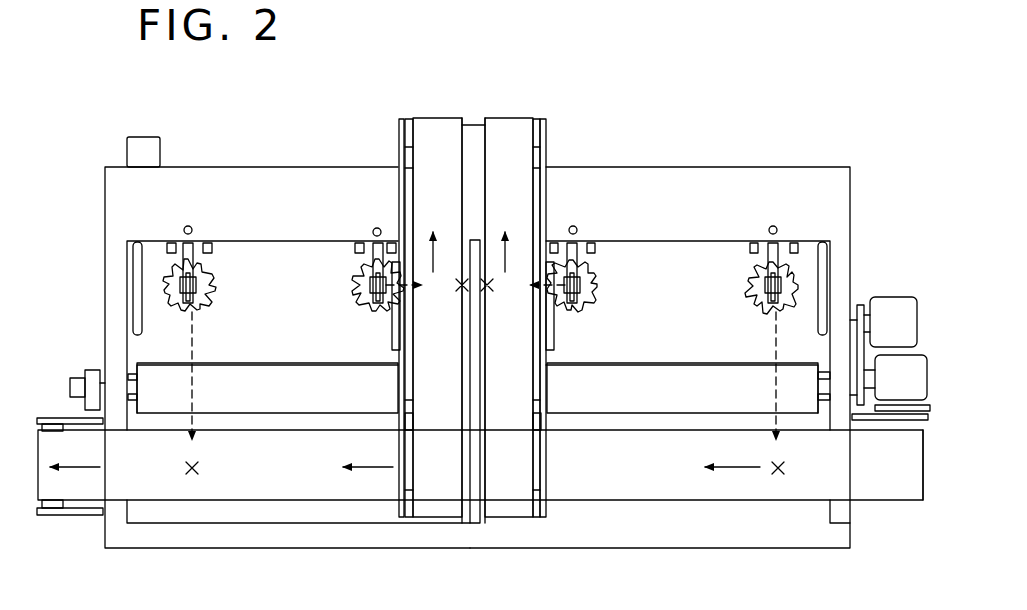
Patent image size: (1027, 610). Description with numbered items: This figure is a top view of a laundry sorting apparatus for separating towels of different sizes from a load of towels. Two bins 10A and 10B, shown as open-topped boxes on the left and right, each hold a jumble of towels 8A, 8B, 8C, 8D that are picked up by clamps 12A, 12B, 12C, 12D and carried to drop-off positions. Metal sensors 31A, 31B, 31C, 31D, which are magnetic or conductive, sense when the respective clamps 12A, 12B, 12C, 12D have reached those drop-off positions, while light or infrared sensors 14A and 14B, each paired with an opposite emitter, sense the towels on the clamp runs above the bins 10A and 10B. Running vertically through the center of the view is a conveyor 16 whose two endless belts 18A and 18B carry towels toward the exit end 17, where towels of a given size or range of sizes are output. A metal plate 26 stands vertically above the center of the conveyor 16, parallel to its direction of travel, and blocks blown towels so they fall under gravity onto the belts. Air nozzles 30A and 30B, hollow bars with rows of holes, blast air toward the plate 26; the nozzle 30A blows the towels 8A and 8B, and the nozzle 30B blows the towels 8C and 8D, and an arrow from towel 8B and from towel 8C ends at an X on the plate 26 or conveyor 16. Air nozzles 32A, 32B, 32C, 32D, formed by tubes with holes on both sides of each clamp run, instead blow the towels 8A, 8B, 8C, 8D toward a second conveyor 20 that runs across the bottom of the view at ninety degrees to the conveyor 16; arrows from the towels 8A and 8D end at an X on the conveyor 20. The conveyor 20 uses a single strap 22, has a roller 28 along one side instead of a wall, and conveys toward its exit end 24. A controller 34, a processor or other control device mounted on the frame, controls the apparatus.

The bin 10A is at (251, 167).
The bin 10B is at (683, 167).
The towel 8A is at (207, 300).
The towel 8B is at (356, 295).
The towel 8C is at (598, 292).
The towel 8D is at (762, 305).
The clamp 12A is at (198, 274).
The clamp 12B is at (362, 274).
The clamp 12C is at (585, 275).
The clamp 12D is at (760, 275).
The sensor 14A is at (392, 338).
The sensor 14B is at (556, 325).
The conveyor 16 is at (474, 125).
The end 17 is at (544, 122).
The belt 18A is at (437, 118).
The belt 18B is at (510, 118).
The conveyor 20 is at (66, 417).
The strap 22 is at (37, 510).
The end 24 is at (34, 430).
The plate 26 is at (480, 396).
The roller 28 is at (792, 398).
The air nozzle 30A is at (135, 285).
The air nozzle 30B is at (820, 283).
The sensor 31A is at (189, 226).
The sensor 31B is at (375, 228).
The sensor 31C is at (575, 226).
The sensor 31D is at (773, 226).
The air nozzle 32A is at (170, 243).
The air nozzle 32B is at (390, 243).
The air nozzle 32C is at (553, 243).
The air nozzle 32D is at (753, 243).
The controller 34 is at (127, 160).